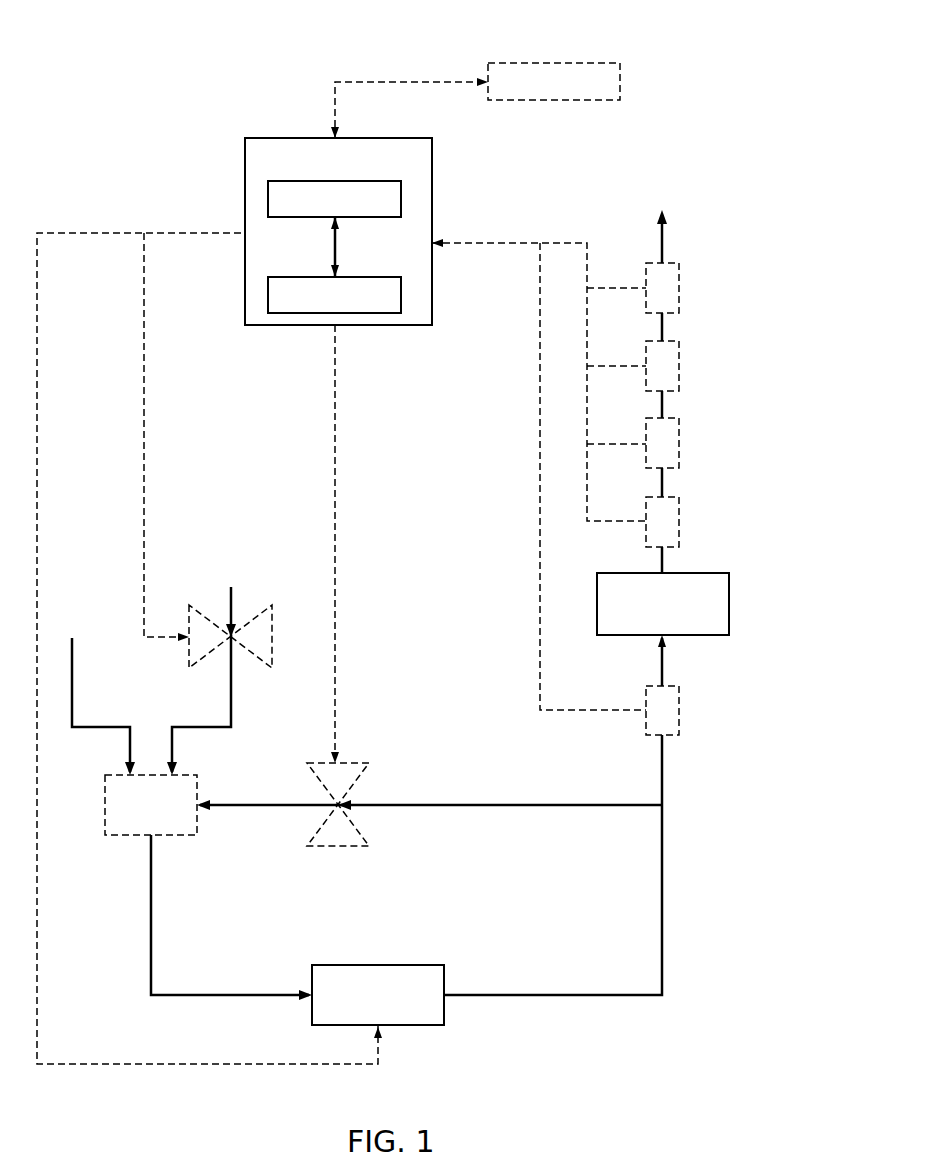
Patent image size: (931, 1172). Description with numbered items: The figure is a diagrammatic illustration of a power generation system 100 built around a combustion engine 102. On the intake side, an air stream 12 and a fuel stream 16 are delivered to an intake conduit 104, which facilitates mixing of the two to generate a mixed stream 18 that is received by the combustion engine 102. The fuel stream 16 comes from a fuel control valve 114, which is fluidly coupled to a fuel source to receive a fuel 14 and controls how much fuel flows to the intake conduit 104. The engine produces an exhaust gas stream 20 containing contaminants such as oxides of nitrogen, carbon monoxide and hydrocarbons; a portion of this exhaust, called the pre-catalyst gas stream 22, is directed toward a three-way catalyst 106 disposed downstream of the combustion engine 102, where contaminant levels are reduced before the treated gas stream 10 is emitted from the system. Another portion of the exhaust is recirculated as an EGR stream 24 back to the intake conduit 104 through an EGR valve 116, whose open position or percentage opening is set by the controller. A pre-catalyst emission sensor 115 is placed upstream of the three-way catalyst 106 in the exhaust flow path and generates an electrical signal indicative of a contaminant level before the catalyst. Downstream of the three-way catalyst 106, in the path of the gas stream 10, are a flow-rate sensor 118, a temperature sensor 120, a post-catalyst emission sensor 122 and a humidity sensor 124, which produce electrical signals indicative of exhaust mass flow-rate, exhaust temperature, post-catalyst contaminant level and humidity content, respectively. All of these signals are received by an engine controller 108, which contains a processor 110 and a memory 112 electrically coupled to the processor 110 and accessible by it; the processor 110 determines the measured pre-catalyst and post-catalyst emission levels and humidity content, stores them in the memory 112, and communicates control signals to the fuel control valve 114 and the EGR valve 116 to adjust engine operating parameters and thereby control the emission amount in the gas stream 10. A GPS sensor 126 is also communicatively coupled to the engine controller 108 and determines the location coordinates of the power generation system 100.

The power generation system 100 is at (133, 36).
The engine controller 108 is at (432, 146).
The processor 110 is at (401, 196).
The memory 112 is at (401, 292).
The global positioning system (GPS) sensor 126 is at (620, 80).
The gas stream 10 is at (662, 240).
The humidity sensor 124 is at (679, 290).
The post-catalyst emission sensor 122 is at (679, 367).
The temperature sensor 120 is at (679, 445).
The flow-rate sensor 118 is at (679, 522).
The three-way catalyst 106 is at (729, 605).
The pre-catalyst emission sensor 115 is at (679, 712).
The pre-catalyst gas stream 22 is at (662, 770).
The exhaust gas stream 20 is at (662, 898).
The EGR stream 24 is at (206, 806).
The EGR valve 116 is at (341, 763).
The air stream 12 is at (72, 683).
The fuel 14 is at (231, 595).
The fuel control valve 114 is at (272, 637).
The fuel stream 16 is at (231, 700).
The intake conduit 104 is at (125, 836).
The mixed stream 18 is at (151, 905).
The combustion engine 102 is at (410, 965).